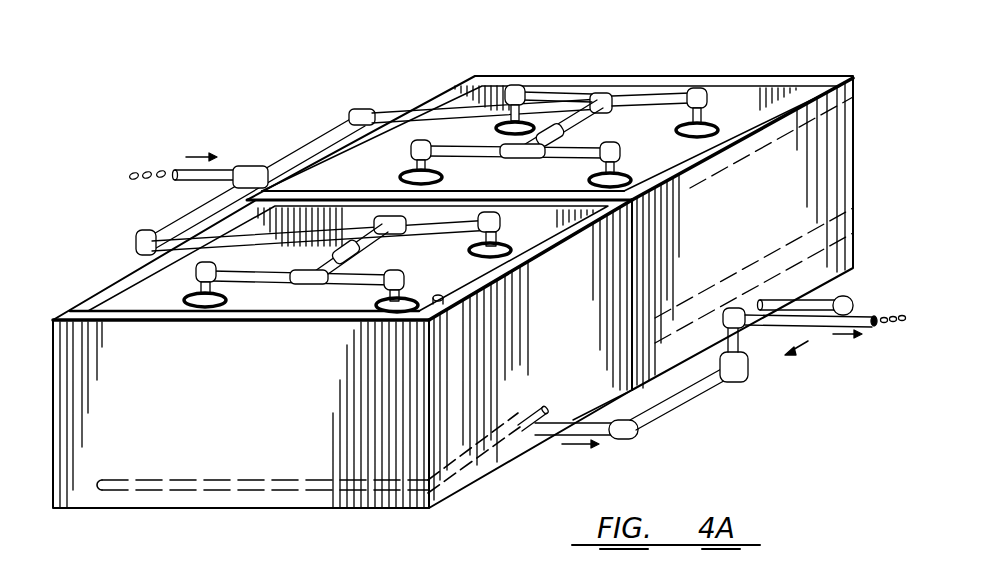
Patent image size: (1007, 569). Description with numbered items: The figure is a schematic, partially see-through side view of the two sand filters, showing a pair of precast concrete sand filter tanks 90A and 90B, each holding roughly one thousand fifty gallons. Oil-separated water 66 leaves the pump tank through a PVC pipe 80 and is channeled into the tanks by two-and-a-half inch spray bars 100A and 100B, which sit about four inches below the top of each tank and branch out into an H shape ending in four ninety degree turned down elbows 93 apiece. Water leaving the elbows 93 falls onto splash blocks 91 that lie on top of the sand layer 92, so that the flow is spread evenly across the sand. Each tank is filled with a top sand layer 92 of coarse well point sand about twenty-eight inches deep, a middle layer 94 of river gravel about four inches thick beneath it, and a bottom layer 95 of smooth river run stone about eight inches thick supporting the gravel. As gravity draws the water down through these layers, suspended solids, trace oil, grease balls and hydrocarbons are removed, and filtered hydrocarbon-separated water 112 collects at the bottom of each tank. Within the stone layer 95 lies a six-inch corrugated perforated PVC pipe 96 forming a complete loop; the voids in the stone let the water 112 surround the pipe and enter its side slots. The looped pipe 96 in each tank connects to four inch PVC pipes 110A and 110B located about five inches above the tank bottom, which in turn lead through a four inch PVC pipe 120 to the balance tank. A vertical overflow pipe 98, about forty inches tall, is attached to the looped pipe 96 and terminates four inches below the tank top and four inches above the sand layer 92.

The oil-separated water 66 is at (147, 170).
The PVC pipe 80 is at (219, 168).
The sand filter tank 90A is at (52, 376).
The sand filter tank 90B is at (790, 77).
The splash blocks 91 is at (719, 118).
The sand layer 92 is at (838, 135).
The 90 degree turned down elbows 93 is at (693, 90).
The middle layer of river gravel 94 is at (832, 218).
The bottom layer of river run stone 95 is at (836, 243).
The corrugated perforated PVC pipe 96 is at (283, 497).
The overflow pipe 98 is at (440, 423).
The spray bar 100A is at (185, 243).
The spray bar 100B is at (418, 112).
The PVC pipe 110A is at (655, 420).
The PVC pipe 110B is at (772, 350).
The hydrocarbon-separated water 112 is at (886, 318).
The PVC pipe 120 is at (868, 327).